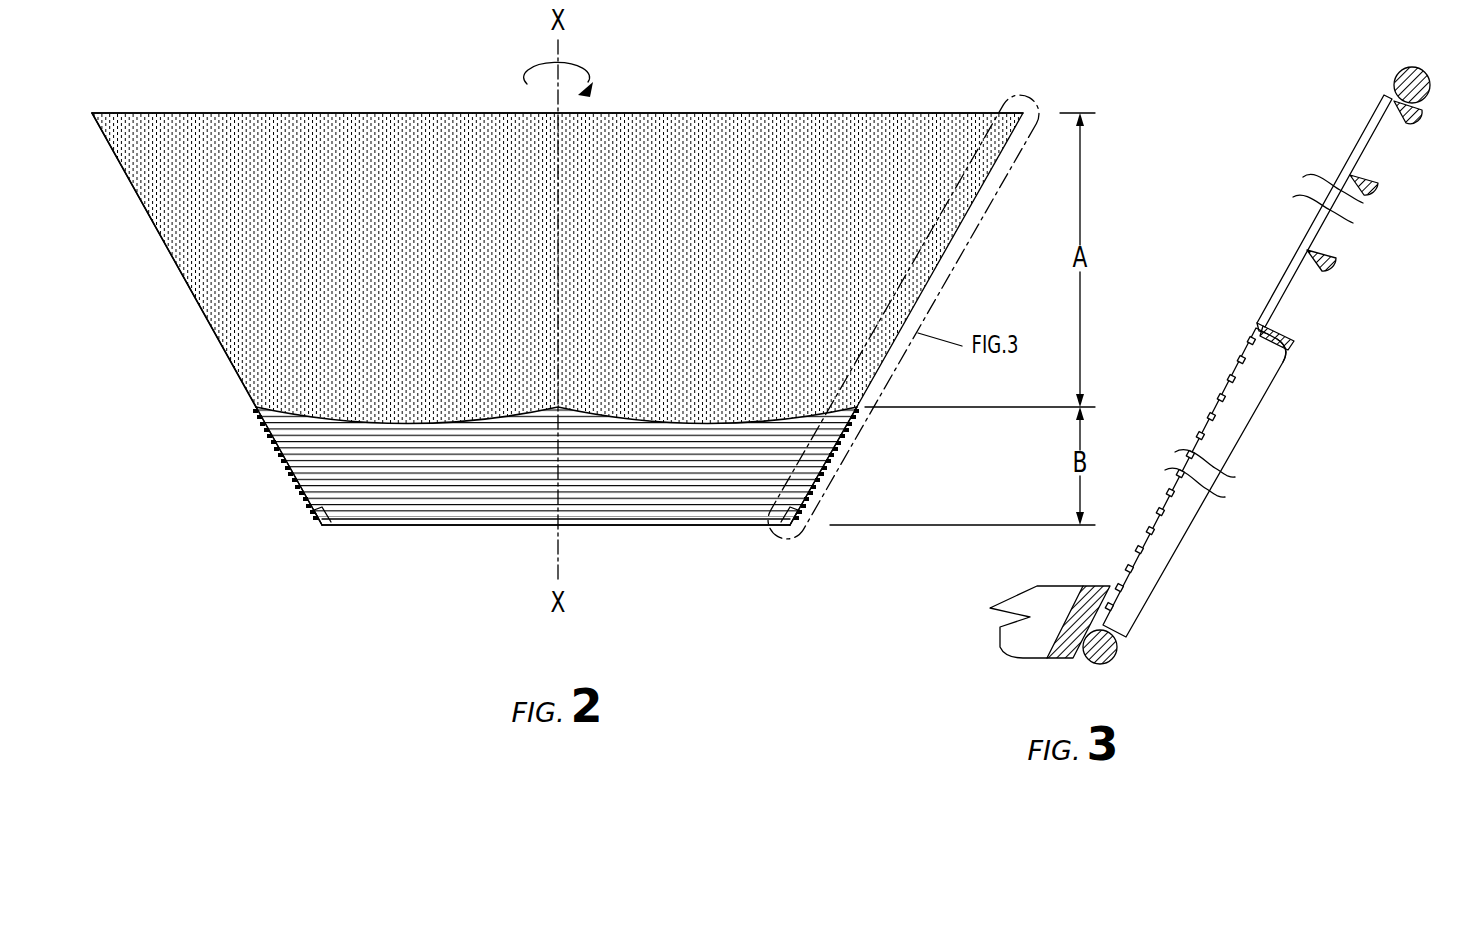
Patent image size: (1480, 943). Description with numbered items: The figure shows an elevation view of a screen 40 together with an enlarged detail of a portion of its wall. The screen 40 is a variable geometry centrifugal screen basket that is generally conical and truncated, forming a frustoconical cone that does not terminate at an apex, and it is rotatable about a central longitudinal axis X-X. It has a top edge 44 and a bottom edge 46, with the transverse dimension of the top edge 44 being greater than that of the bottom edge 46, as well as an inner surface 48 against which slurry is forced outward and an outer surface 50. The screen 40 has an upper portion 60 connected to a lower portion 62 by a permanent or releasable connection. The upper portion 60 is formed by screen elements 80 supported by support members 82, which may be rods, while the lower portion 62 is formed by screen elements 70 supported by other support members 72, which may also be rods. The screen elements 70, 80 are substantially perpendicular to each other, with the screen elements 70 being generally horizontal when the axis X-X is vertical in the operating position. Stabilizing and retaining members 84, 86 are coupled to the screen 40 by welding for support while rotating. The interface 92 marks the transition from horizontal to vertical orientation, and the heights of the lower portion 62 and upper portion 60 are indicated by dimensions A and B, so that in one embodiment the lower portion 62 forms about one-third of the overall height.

In FIG. 2, the screen 40 is at (699, 84).
In FIG. 2, the top edge 44 is at (278, 113).
In FIG. 2, the bottom edge 46 is at (660, 525).
In FIG. 3, the inner surface 48 is at (1216, 312).
In FIG. 3, the outer surface 50 is at (1312, 359).
In FIG. 2, the upper portion 60 is at (183, 292).
In FIG. 2, the lower portion 62 is at (262, 462).
In FIG. 2, the screen elements 70 is at (710, 485).
In FIG. 3, the screen elements 70 is at (1213, 410).
In FIG. 3, the support members 72 is at (1205, 510).
In FIG. 2, the screen elements 80 is at (893, 135).
In FIG. 3, the screen elements 80 is at (1362, 138).
In FIG. 3, the support members 82 is at (1336, 263).
In FIG. 3, the stabilizing and/or retaining member 84 is at (1398, 72).
In FIG. 2, the stabilizing and/or retaining member 86 is at (444, 520).
In FIG. 3, the stabilizing and/or retaining member 86 is at (1047, 607).
In FIG. 2, the interface 92 is at (772, 430).